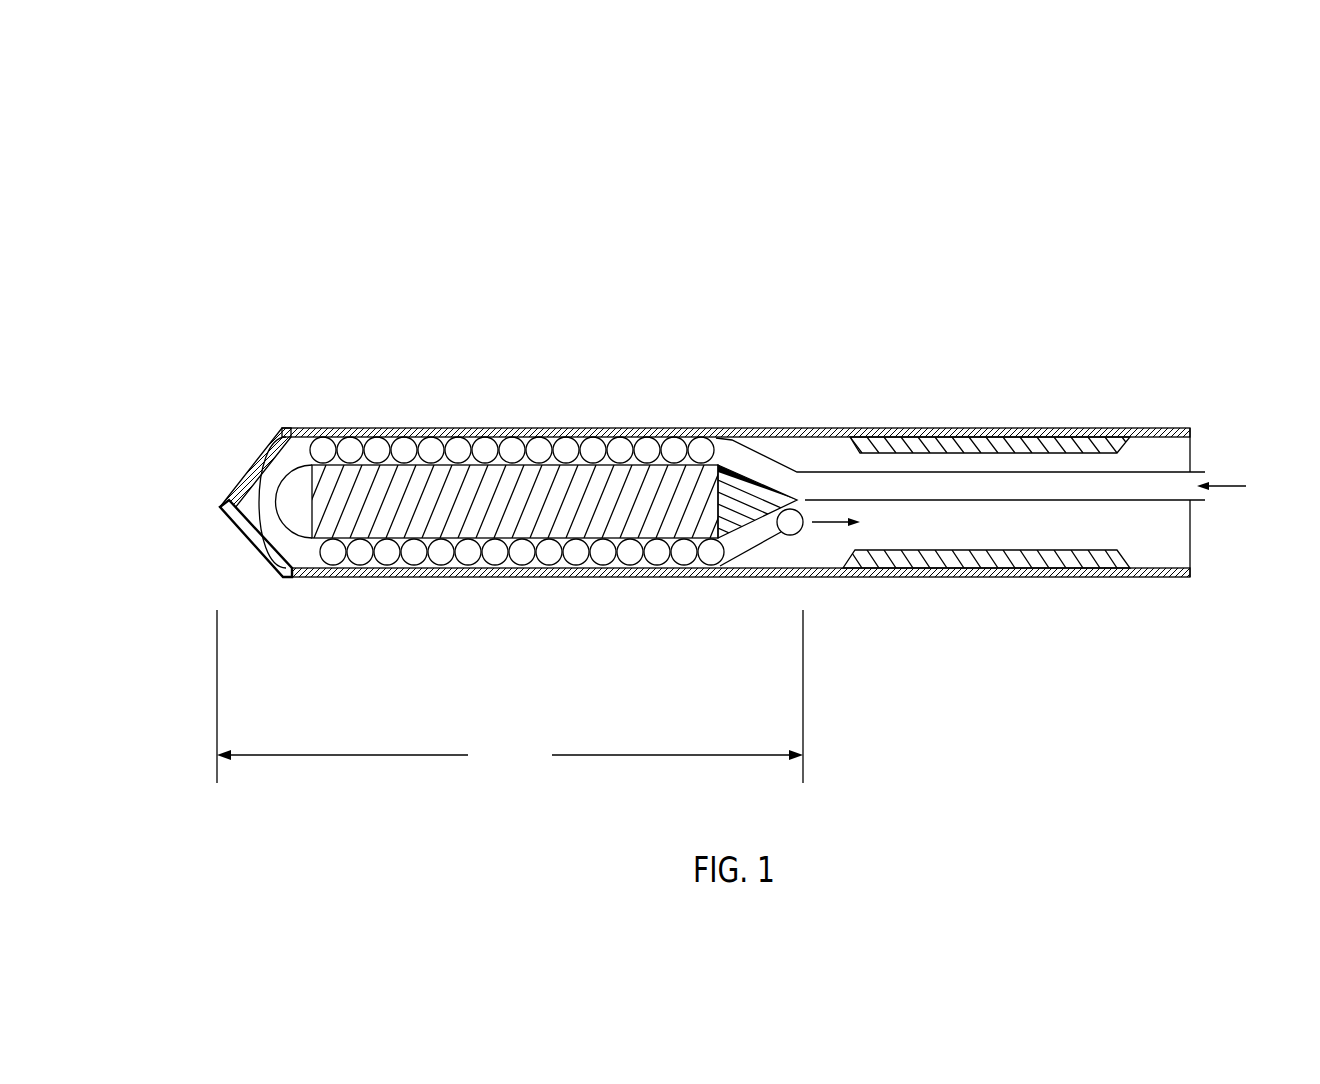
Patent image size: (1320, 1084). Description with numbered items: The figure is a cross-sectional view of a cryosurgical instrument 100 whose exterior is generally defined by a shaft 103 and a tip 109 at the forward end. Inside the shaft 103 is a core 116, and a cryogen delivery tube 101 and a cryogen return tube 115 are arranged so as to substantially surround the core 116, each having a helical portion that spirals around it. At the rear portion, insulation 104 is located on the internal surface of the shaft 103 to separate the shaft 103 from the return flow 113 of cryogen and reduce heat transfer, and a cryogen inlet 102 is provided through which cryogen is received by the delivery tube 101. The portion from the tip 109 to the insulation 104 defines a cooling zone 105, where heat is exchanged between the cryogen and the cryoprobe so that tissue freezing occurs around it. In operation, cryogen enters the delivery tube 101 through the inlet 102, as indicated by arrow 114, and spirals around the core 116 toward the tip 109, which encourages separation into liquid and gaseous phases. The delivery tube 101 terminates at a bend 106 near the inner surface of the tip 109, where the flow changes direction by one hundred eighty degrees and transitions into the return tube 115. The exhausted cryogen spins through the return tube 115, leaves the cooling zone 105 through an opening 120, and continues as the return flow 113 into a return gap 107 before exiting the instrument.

The cryosurgical instrument 100 is at (470, 192).
The cryogen delivery tube 101 is at (703, 450).
The cryogen inlet 102 is at (1168, 485).
The shaft 103 is at (1043, 437).
The insulation 104 is at (952, 445).
The cooling zone 105 is at (510, 696).
The bend 106 is at (238, 518).
The return gap 107 is at (1070, 525).
The tip 109 is at (273, 520).
The return flow 113 is at (830, 527).
The inflow arrow 114 is at (1248, 487).
The cryogen return tube 115 is at (713, 556).
The core 116 is at (610, 482).
The opening 120 is at (790, 535).